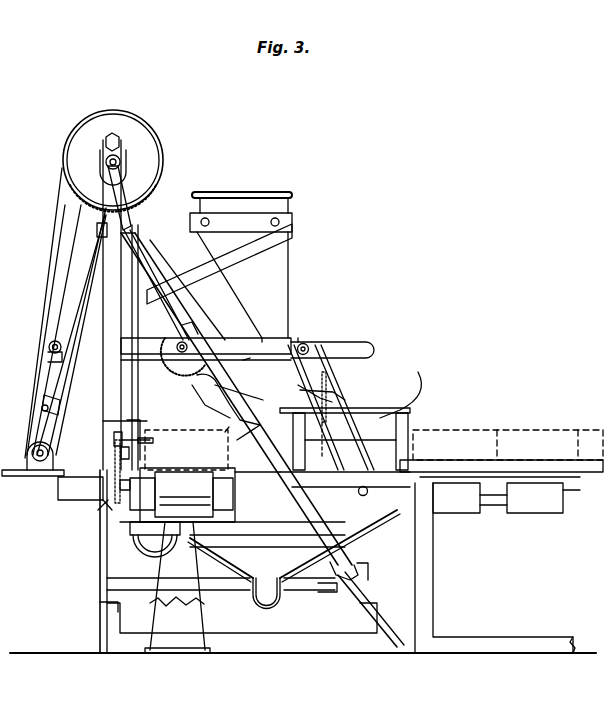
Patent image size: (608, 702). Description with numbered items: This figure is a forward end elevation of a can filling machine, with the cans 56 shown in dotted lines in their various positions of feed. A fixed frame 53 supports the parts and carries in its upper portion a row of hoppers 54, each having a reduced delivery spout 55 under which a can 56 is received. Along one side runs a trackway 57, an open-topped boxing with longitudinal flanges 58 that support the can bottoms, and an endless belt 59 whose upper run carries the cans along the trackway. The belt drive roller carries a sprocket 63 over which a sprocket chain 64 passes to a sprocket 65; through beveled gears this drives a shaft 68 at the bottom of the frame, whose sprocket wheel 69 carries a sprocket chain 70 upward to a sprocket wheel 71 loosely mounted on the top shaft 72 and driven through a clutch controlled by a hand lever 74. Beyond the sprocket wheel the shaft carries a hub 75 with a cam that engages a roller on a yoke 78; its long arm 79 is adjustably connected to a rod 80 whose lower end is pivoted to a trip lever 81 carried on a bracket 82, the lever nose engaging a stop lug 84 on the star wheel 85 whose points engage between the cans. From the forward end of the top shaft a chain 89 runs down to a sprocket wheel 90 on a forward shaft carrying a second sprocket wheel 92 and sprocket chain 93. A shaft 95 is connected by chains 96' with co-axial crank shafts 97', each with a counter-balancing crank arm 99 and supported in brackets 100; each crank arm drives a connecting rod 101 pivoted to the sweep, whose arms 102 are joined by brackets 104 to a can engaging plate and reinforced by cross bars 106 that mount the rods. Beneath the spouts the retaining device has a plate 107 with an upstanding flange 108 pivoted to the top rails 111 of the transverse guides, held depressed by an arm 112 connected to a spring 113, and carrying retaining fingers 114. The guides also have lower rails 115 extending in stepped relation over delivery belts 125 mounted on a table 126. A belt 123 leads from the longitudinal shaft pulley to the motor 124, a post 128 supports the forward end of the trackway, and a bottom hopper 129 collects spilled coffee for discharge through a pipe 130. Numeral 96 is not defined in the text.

The frame 53 is at (110, 612).
The hopper 54 is at (283, 262).
The delivery spout 55 is at (272, 360).
The can 56 is at (515, 442).
The trackway 57 is at (247, 507).
The longitudinal flange 58 is at (155, 483).
The endless belt 59 is at (207, 520).
The sprocket 63 is at (115, 490).
The sprocket chain 64 is at (112, 472).
The sprocket 65 is at (112, 458).
The shaft 68 is at (40, 464).
The sprocket wheel 69 is at (33, 437).
The sprocket chain 70 is at (57, 207).
The sprocket wheel 71 is at (128, 125).
The shaft 72 is at (121, 160).
The hand lever 74 is at (170, 300).
The hub 75 is at (101, 153).
The yoke 78 is at (109, 141).
The long arm 79 is at (129, 187).
The rod 80 is at (123, 320).
The trip lever 81 is at (135, 421).
The bracket 82 is at (115, 433).
The stop lug 84 is at (142, 437).
The star wheel 85 is at (147, 443).
The chain 89 is at (168, 248).
The sprocket wheel 90 is at (189, 325).
The sprocket wheel 92 is at (182, 366).
The sprocket chain 93 is at (243, 360).
The shaft 95 is at (363, 496).
The diagonal bar 96 is at (260, 406).
The chain 96' is at (333, 395).
The crank shaft 97' is at (313, 333).
The counter-balancing crank arm 99 is at (358, 340).
The bracket 100 is at (296, 340).
The connecting rod 101 is at (50, 360).
The arm 102 is at (63, 277).
The bracket 104 is at (50, 397).
The cross bar 106 is at (50, 342).
The plate 107 is at (227, 427).
The upstanding flange 108 is at (196, 390).
The top rail 111 is at (380, 407).
The arm 112 is at (327, 370).
The spring 113 is at (333, 390).
The retaining finger 114 is at (263, 400).
The lower rail 115 is at (538, 463).
The belt 123 is at (100, 500).
The motor 124 is at (133, 550).
The delivery belt 125 is at (528, 505).
The table 126 is at (420, 523).
The post 128 is at (163, 610).
The hopper 129 is at (280, 562).
The pipe 130 is at (258, 600).